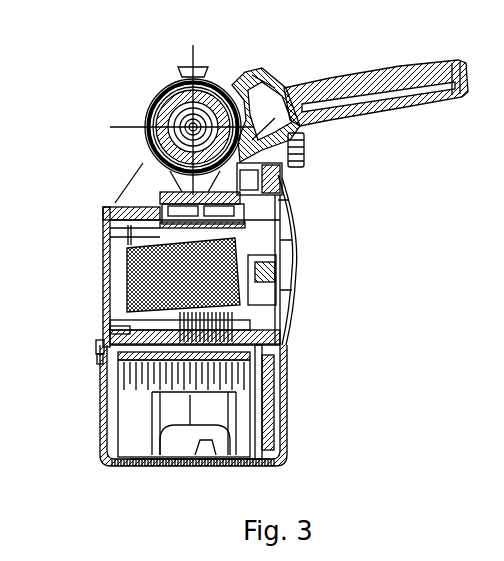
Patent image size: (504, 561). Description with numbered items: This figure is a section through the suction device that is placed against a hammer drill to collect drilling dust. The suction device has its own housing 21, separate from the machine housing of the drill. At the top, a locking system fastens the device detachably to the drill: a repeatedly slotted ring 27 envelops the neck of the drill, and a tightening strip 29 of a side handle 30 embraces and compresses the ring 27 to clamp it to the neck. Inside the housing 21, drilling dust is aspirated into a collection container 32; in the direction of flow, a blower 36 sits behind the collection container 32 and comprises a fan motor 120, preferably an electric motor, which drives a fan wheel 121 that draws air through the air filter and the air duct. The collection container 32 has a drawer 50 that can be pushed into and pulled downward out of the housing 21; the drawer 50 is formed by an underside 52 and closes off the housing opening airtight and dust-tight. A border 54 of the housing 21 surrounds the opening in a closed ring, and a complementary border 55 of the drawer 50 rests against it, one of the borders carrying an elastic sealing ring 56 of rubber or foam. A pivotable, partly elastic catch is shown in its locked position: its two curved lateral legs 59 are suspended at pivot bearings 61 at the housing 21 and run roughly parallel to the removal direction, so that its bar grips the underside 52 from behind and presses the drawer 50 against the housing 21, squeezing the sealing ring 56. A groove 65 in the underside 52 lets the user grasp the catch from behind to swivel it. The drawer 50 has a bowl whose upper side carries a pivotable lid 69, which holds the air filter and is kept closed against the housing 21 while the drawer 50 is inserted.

The housing 21 is at (108, 228).
The ring 27 is at (152, 96).
The tightening strip 29 is at (245, 76).
The side handle 30 is at (398, 97).
The collection container 32 is at (188, 405).
The blower 36 is at (263, 278).
The drawer 50 is at (110, 400).
The underside 52 is at (146, 466).
The border 54 is at (112, 330).
The border 55 is at (100, 346).
The sealing ring 56 is at (285, 338).
The legs 59 is at (100, 440).
The pivot bearings 61 is at (97, 358).
The groove 65 is at (200, 453).
The pivotable lid 69 is at (290, 313).
The fan motor 120 is at (270, 246).
The fan wheel 121 is at (275, 263).